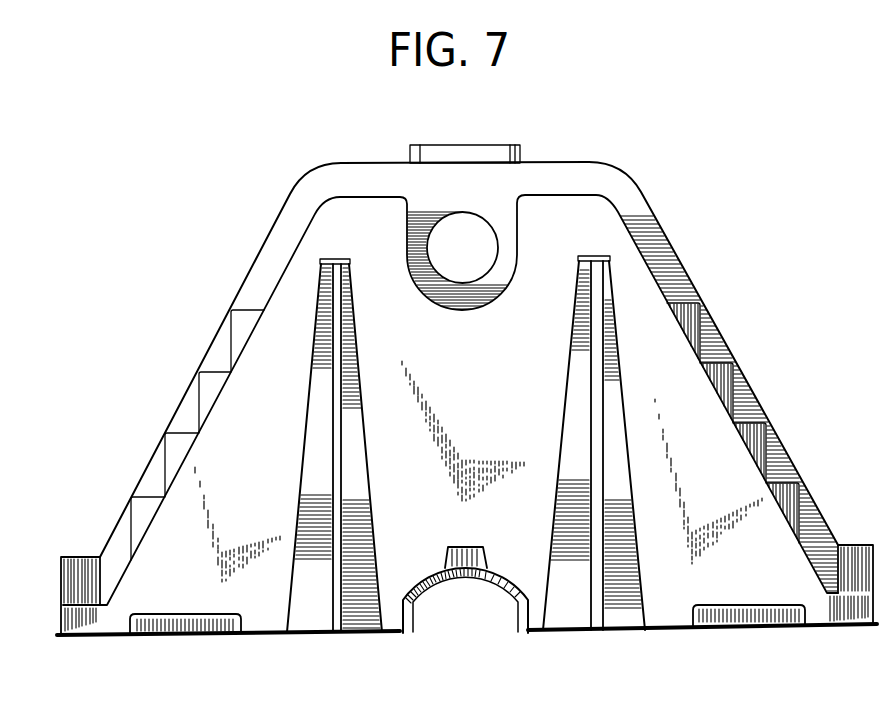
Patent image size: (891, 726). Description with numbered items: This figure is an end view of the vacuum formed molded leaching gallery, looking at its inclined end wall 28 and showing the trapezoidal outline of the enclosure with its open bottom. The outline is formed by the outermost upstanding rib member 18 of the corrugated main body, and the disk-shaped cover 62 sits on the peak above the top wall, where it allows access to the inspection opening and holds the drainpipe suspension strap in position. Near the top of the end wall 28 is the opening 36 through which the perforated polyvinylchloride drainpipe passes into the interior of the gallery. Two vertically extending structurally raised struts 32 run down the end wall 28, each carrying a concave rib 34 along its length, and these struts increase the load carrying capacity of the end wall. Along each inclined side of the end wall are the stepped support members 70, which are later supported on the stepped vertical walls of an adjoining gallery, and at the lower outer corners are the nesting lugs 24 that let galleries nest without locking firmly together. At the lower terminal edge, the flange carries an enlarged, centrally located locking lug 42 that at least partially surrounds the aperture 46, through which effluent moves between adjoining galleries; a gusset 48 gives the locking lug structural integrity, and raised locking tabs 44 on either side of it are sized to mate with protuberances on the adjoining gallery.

The rib member 18 is at (610, 181).
The nesting lug 24 is at (82, 560).
The end wall 28 is at (328, 223).
The strut 32 is at (352, 345).
The concave rib 34 is at (338, 472).
The opening 36 is at (463, 213).
The locking lug 42 is at (403, 616).
The locking tab 44 is at (200, 623).
The aperture 46 is at (432, 590).
The gusset 48 is at (467, 548).
The cover 62 is at (475, 146).
The stepped support member 70 is at (222, 370).